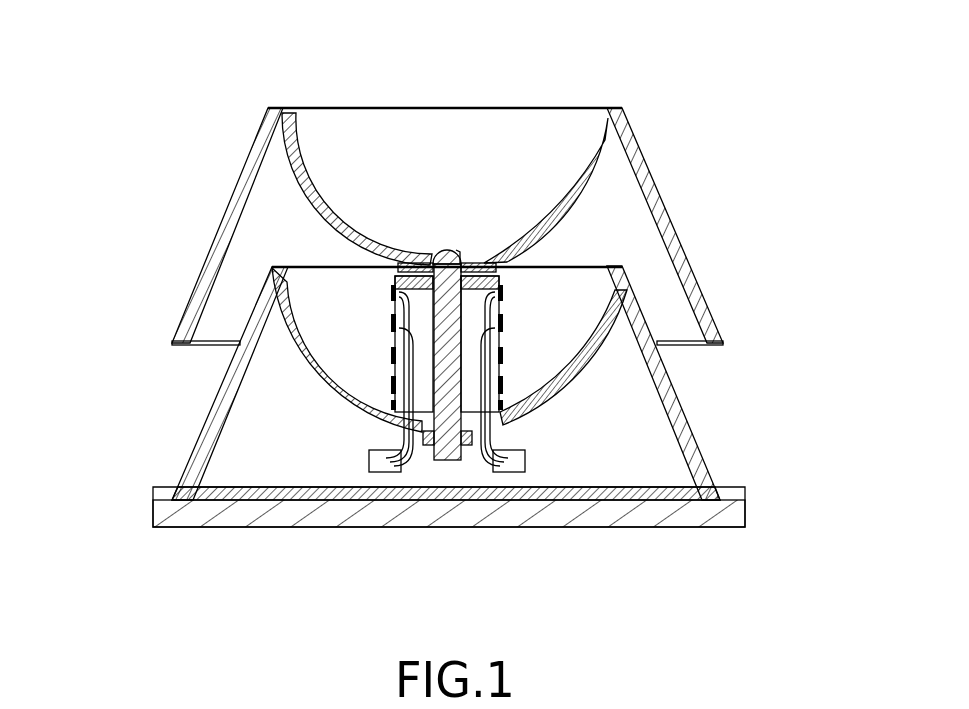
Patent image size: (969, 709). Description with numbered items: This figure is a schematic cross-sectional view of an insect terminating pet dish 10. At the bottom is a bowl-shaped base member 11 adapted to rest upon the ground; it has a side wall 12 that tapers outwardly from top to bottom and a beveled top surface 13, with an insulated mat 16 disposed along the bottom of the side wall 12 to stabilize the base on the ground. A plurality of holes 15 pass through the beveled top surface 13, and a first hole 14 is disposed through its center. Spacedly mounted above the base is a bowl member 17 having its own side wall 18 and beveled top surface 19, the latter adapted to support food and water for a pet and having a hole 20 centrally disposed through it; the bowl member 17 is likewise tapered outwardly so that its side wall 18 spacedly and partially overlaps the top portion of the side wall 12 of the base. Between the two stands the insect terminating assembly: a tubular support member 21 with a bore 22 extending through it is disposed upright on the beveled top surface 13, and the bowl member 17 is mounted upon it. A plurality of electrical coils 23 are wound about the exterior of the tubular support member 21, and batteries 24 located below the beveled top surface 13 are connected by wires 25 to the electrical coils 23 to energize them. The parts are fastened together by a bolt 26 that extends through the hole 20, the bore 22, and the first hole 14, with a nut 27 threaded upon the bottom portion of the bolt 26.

The insect terminating pet dish 10 is at (712, 202).
The bowl-shaped base member 11 is at (680, 394).
The side wall 12 is at (204, 442).
The beveled top surface 13 is at (593, 353).
The first hole 14 is at (498, 458).
The holes 15 is at (512, 428).
The insulated mat 16 is at (155, 527).
The bowl member 17 is at (716, 327).
The side wall 18 is at (650, 162).
The beveled top surface 19 is at (293, 143).
The hole 20 is at (462, 262).
The tubular support member 21 is at (499, 279).
The bore 22 is at (427, 256).
The electrical coils 23 is at (393, 296).
The batteries 24 is at (395, 476).
The wires 25 is at (500, 377).
The bolt 26 is at (470, 257).
The nut 27 is at (464, 445).